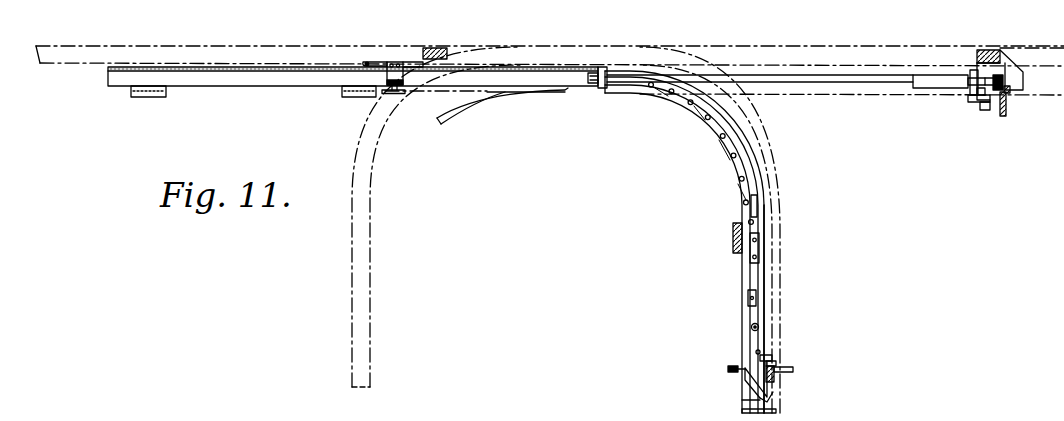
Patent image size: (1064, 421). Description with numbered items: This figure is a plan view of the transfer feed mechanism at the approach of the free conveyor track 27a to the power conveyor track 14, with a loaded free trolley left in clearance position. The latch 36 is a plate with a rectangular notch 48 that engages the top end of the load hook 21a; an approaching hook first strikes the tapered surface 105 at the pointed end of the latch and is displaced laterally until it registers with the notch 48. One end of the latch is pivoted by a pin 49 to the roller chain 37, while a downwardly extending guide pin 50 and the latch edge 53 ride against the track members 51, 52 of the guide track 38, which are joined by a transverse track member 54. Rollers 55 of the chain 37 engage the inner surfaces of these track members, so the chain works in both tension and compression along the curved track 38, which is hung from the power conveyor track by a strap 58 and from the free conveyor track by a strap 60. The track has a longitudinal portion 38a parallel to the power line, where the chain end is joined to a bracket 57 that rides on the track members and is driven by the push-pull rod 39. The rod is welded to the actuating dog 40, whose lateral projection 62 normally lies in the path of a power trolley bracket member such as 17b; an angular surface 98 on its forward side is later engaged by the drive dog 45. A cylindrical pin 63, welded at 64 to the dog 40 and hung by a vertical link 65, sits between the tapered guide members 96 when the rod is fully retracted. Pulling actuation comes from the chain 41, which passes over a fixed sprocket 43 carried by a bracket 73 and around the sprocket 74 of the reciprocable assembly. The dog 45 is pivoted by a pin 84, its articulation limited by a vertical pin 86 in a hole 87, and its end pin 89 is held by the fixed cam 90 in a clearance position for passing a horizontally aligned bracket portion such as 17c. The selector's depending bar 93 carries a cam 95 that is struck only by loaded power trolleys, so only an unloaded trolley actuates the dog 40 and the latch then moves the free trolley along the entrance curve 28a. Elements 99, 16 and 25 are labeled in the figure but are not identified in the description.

The power conveyor track 14 is at (759, 46).
The longitudinal portion of guide track 38a is at (275, 78).
The strap 58 is at (148, 97).
The cylindrical hole 87 is at (356, 97).
The vertical pin 89 is at (378, 62).
The fixed cam 90 is at (368, 62).
The pivot pin 84 is at (399, 62).
The vertical pin 86 is at (392, 62).
The drive dog 45 is at (428, 48).
The sprocket 74 is at (393, 94).
The power trolley bracket member 17c is at (455, 46).
The curved guide strip 99 is at (458, 112).
The bracket 57 is at (602, 67).
The push-pull rod 39 is at (875, 83).
The actuating dog 40 is at (955, 84).
The chain 41 is at (912, 97).
The curved horizontal section 28a is at (762, 118).
The free conveyor track 27a is at (781, 328).
The track member 52 is at (740, 178).
The roller bracket 16 is at (758, 206).
The strap 60 is at (733, 243).
The rollers 55 is at (760, 251).
The guide track 38 is at (765, 276).
The push-pull actuating chain 37 is at (758, 298).
The pin 49 is at (751, 327).
The guide pin 50 is at (755, 352).
The rectangular notch 48 is at (770, 358).
The load hook 21a is at (776, 364).
The latch 36 is at (775, 384).
The bolt head 25 is at (728, 369).
The edge of latch 53 is at (748, 378).
The tapered surface 105 is at (770, 393).
The transverse track member 54 is at (750, 400).
The track member 51 is at (776, 406).
The lateral projection 62 is at (978, 60).
The power trolley bracket member 17b is at (1000, 50).
The cam 95 is at (1010, 66).
The angular surface 98 is at (963, 77).
The cylindrical pin extension 63 is at (1024, 80).
The depending bar 93 is at (1011, 93).
The tapered guide members 96 is at (1007, 102).
The weld 64 is at (975, 87).
The vertical link 65 is at (980, 95).
The fixed sprocket 43 is at (976, 102).
The bracket 73 is at (990, 108).